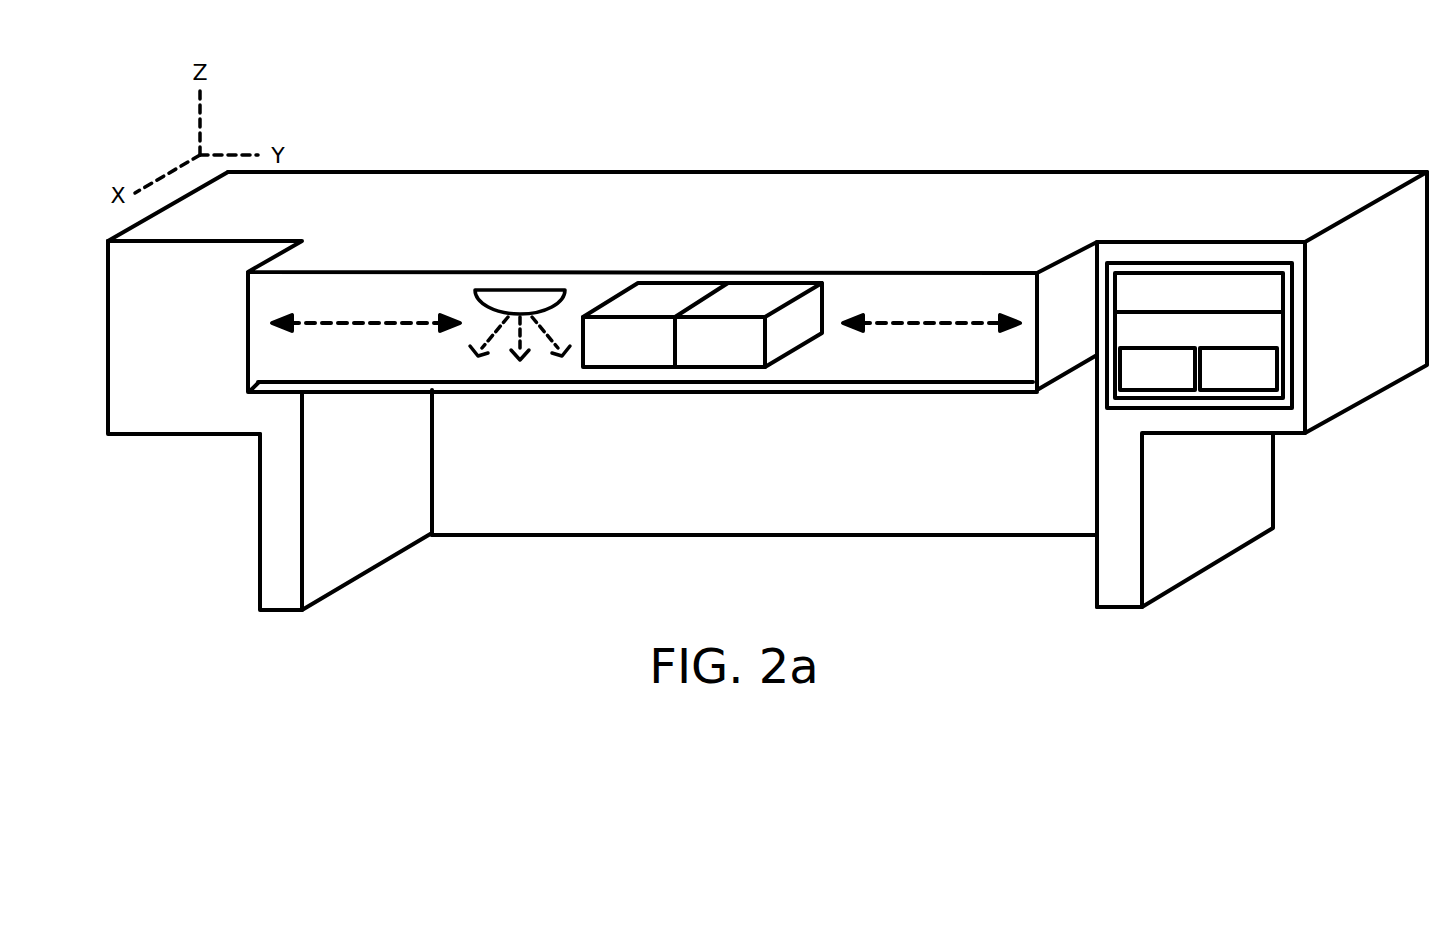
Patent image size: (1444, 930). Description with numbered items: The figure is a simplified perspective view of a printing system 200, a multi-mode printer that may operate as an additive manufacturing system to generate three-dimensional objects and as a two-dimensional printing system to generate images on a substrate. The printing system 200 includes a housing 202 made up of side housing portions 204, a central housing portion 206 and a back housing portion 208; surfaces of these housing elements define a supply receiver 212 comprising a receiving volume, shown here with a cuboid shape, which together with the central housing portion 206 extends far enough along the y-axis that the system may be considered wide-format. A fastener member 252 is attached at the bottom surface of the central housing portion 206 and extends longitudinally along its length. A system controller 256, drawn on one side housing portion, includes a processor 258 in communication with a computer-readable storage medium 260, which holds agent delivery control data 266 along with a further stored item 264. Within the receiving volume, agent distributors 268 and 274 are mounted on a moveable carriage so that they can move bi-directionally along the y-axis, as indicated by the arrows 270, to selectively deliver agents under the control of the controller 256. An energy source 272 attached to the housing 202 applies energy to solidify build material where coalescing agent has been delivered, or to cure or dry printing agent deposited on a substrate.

The printing system 200 is at (1148, 122).
The housing 202 is at (847, 173).
The side housing portions 204 is at (265, 518).
The central housing portion 206 is at (578, 192).
The back housing portion 208 is at (888, 537).
The supply receiver 212 is at (685, 550).
The fastener member 252 is at (553, 383).
The system controller 256 is at (1180, 263).
The processor 258 is at (1199, 297).
The computer-readable storage medium 260 is at (1197, 331).
The button 264 is at (1157, 369).
The agent delivery control data 266 is at (1238, 369).
The agent distributor 268 is at (648, 282).
The arrows 270 is at (320, 320).
The energy source 272 is at (520, 288).
The agent distributor 274 is at (743, 282).